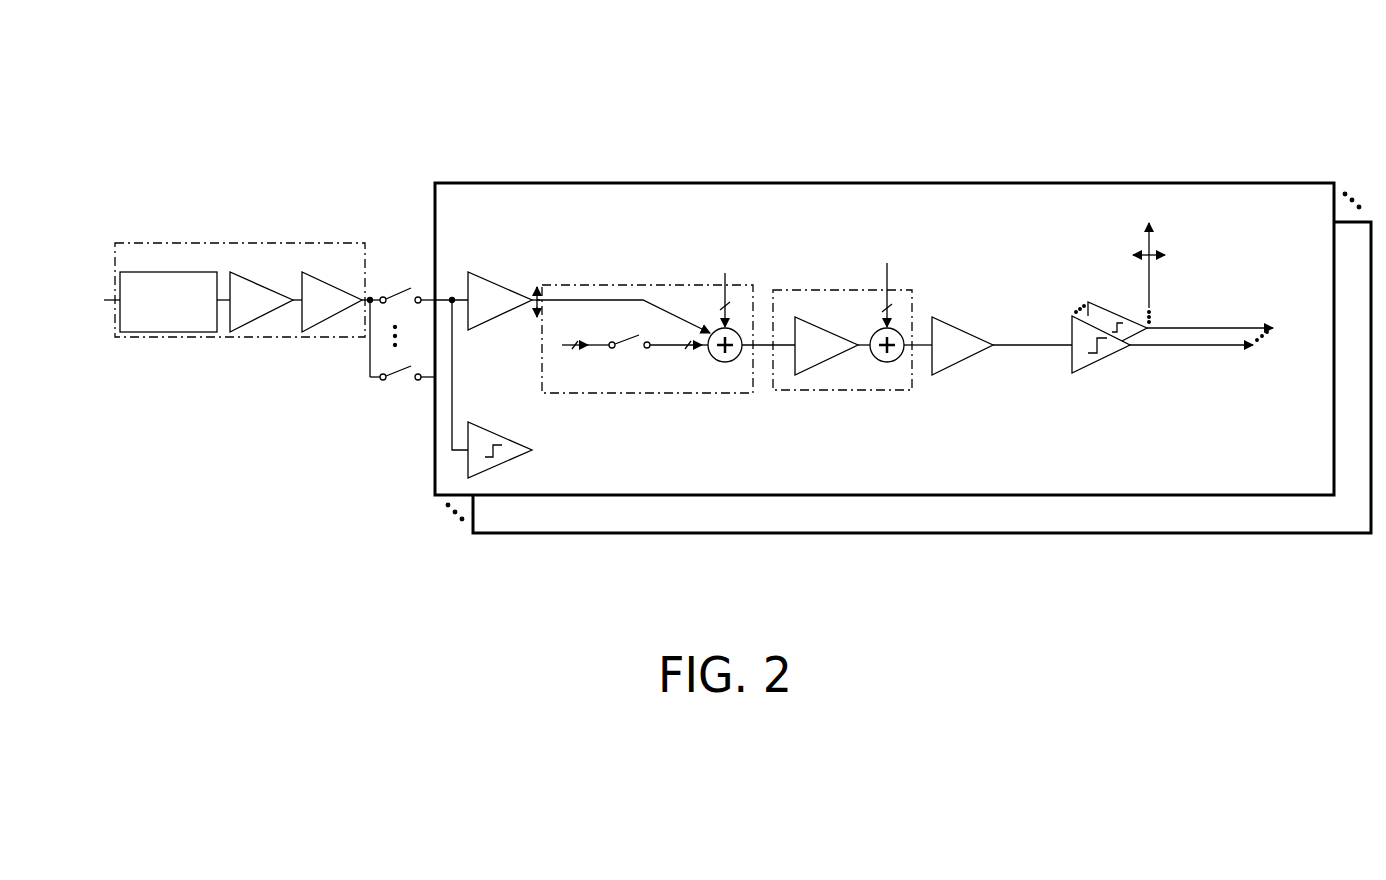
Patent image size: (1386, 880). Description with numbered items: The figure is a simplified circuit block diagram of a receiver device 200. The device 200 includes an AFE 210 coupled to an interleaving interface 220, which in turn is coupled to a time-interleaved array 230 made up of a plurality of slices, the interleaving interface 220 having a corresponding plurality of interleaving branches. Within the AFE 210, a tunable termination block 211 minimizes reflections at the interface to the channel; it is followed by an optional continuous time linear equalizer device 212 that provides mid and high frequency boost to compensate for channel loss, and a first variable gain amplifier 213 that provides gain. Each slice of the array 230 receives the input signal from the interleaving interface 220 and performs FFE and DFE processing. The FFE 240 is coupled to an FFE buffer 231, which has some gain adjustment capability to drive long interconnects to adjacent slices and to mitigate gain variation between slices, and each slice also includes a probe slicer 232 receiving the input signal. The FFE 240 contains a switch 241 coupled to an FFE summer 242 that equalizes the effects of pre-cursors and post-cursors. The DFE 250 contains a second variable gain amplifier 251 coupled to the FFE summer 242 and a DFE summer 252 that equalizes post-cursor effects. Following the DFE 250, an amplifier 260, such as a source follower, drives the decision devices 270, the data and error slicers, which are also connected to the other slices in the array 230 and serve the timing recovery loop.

The receiver device 200 is at (322, 78).
The AFE 210 is at (173, 242).
The tunable termination block 211 is at (168, 302).
The continuous time linear equalizer (CTLE) device 212 is at (260, 291).
The first variable gain amplifier (VGA1) 213 is at (332, 291).
The interleaving interface 220 is at (368, 352).
The time-interleaved (TI) array 230 is at (517, 182).
The FFE buffer 231 is at (500, 281).
The probe slicer 232 is at (505, 462).
The FFE 240 is at (640, 285).
The switch 241 is at (616, 349).
The FFE summer 242 is at (713, 356).
The decision-feedback equalizer (DFE) 250 is at (857, 290).
The second VGA (VGA2) 251 is at (826, 340).
The DFE summer 252 is at (877, 356).
The amplifier 260 is at (962, 340).
The decision devices 270 is at (1090, 302).